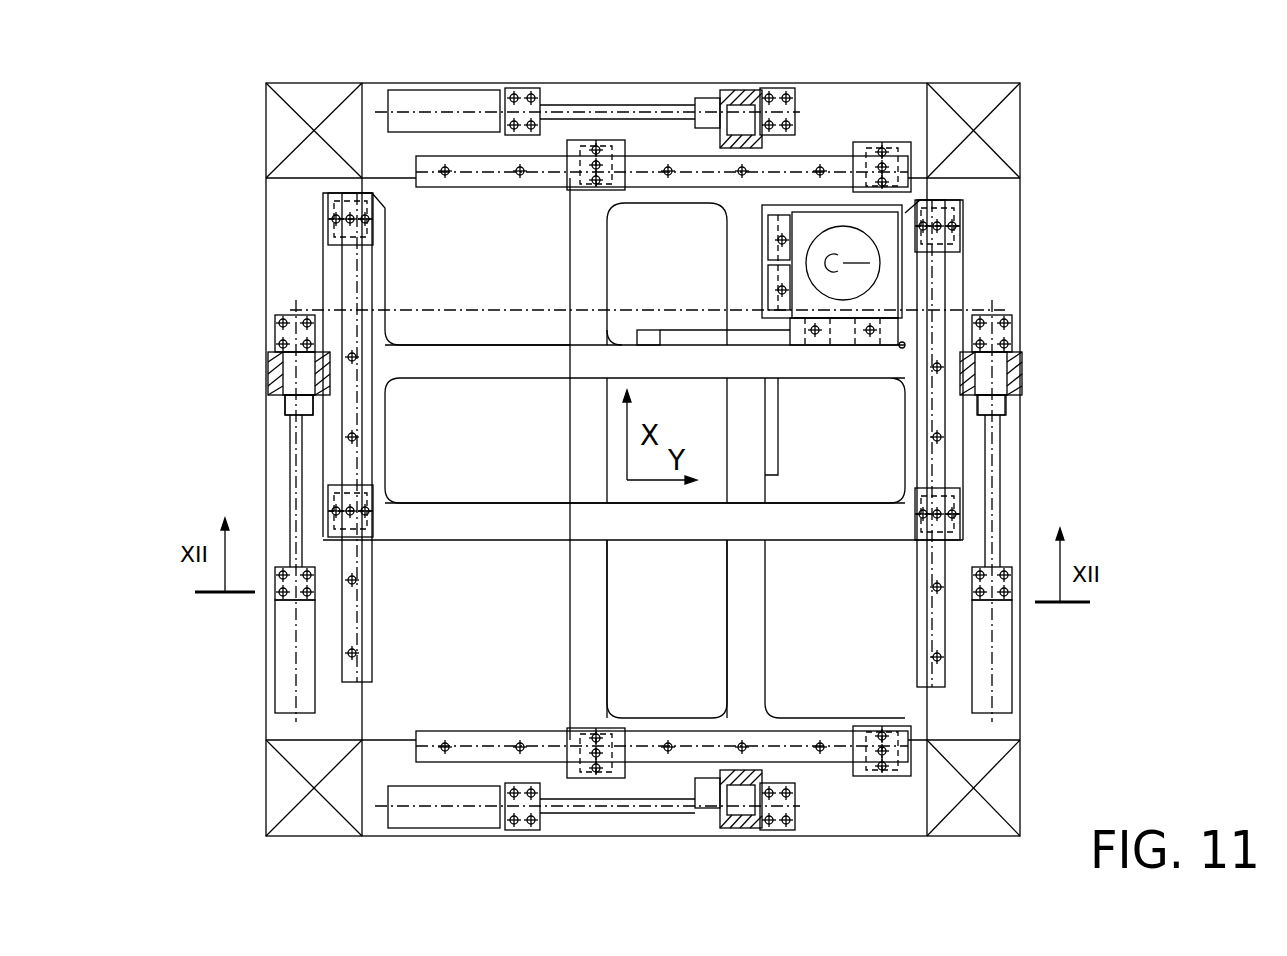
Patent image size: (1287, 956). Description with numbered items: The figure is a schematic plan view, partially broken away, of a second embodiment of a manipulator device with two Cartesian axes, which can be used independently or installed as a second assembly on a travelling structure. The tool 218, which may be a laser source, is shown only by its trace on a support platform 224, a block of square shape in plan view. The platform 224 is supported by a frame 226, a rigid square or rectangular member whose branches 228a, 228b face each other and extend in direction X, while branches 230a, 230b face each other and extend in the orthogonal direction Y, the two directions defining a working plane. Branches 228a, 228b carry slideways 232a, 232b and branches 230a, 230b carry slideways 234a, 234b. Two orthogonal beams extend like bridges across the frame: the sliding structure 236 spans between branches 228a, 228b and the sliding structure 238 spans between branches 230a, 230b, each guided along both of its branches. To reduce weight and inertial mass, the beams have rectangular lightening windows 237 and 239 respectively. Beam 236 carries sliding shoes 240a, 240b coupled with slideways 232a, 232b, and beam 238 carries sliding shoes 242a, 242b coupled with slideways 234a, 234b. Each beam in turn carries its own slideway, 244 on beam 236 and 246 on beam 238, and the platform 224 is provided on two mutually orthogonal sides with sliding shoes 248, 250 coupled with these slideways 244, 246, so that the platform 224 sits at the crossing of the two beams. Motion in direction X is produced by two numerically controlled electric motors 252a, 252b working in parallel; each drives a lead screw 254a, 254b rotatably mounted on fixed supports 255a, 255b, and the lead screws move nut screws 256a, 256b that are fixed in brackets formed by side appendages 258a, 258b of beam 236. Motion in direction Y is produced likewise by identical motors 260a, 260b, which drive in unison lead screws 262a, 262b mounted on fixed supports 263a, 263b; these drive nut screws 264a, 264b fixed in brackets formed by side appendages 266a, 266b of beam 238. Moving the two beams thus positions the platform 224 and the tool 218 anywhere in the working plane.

The frame 226 is at (1037, 223).
The branch 228a is at (290, 238).
The branch 228b is at (1010, 726).
The branch 230a is at (832, 110).
The branch 230b is at (900, 808).
The tool 218 is at (870, 262).
The support platform 224 is at (868, 278).
The slideway 232a is at (352, 636).
The slideway 232b is at (925, 620).
The slideway 234a is at (470, 168).
The slideway 234b is at (478, 745).
The sliding structure 236 is at (522, 553).
The lightening window 237 is at (690, 506).
The sliding structure 238 is at (555, 287).
The lightening window 239 is at (723, 625).
The sliding shoe 240a is at (335, 240).
The sliding shoe 240b is at (965, 210).
The sliding shoe 242a is at (598, 155).
The sliding shoe 242b is at (620, 735).
The slideway 244 is at (655, 335).
The slideway 246 is at (772, 435).
The sliding shoe 248 is at (870, 340).
The sliding shoe 250 is at (778, 295).
The electric motor 252a is at (290, 665).
The electric motor 252b is at (1000, 672).
The lead screw 254a is at (285, 515).
The lead screw 254b is at (995, 537).
The fixed support 255a is at (300, 325).
The fixed support 255b is at (1010, 330).
The nut screw 256a is at (295, 398).
The nut screw 256b is at (1000, 410).
The side appendage 258a is at (298, 350).
The side appendage 258b is at (1005, 370).
The electric motor 260a is at (418, 100).
The electric motor 260b is at (410, 800).
The lead screw 262a is at (590, 105).
The lead screw 262b is at (557, 800).
The fixed support 263a is at (520, 98).
The fixed support 263b is at (525, 792).
The nut screw 264a is at (730, 100).
The nut screw 264b is at (712, 775).
The side appendage 266a is at (692, 185).
The side appendage 266b is at (722, 775).